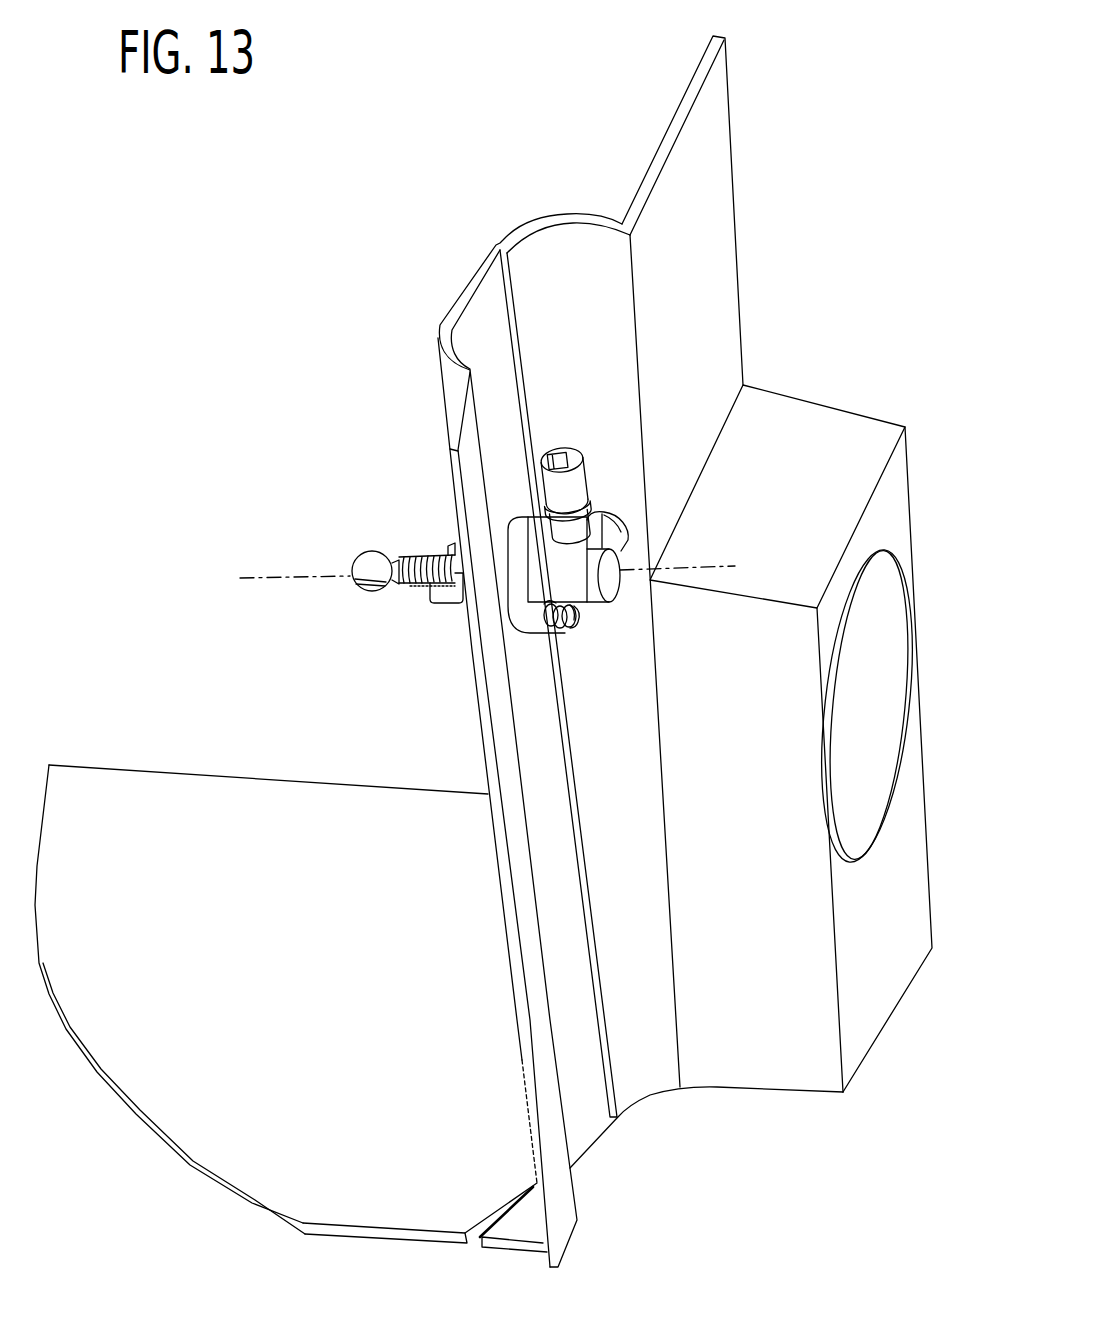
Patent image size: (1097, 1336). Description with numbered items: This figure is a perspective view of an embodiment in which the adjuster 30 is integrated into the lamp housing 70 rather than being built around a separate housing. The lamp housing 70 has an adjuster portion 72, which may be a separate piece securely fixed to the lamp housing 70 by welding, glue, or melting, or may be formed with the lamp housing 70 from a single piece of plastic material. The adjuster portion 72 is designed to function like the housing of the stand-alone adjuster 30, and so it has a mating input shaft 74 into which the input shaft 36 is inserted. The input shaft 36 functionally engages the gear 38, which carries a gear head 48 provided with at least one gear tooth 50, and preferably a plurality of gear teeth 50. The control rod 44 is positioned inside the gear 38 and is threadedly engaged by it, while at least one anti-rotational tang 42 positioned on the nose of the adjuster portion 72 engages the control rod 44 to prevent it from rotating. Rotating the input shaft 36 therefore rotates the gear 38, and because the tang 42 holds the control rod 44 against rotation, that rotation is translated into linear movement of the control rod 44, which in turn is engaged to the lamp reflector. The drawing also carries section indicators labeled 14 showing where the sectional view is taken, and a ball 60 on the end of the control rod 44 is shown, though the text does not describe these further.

The adjuster 30 is at (212, 322).
The lamp housing 70 is at (476, 268).
The section line 14- 14 is at (240, 578).
The input shaft 36 is at (588, 454).
The mating input shaft 74 is at (601, 511).
The control rod 44 is at (407, 545).
The ball 60 is at (377, 593).
The anti-rotational tang 42 is at (447, 597).
The adjuster portion 72 is at (544, 640).
The gear 38 is at (622, 591).
The gear head 48 is at (558, 634).
The gear teeth 50 is at (583, 620).